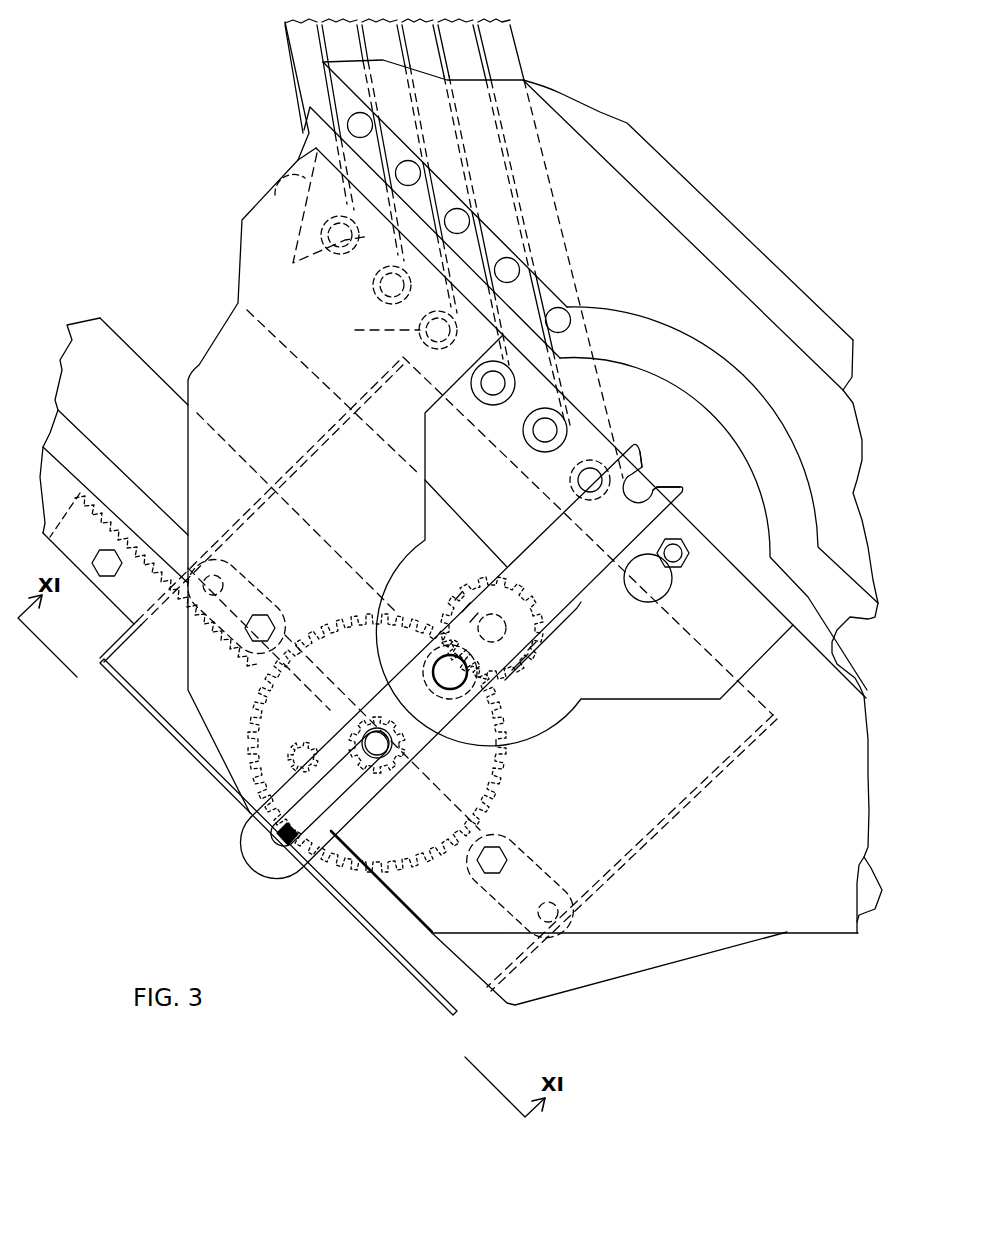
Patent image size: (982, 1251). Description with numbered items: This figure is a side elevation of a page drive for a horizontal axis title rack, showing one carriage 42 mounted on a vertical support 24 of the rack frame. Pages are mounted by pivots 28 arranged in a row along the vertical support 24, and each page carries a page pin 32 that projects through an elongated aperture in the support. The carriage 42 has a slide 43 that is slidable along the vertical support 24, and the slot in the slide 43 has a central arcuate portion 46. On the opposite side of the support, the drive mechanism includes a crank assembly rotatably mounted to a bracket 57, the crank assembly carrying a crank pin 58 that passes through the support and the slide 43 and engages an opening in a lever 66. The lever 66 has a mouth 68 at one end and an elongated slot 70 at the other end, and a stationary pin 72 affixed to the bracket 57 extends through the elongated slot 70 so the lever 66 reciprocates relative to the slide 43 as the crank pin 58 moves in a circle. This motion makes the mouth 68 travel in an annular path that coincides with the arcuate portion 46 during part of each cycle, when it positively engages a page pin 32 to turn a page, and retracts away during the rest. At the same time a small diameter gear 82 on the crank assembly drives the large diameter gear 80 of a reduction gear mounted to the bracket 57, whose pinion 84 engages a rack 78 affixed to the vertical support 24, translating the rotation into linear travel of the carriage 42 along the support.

The vertical support 24 is at (640, 975).
The pivot 28 is at (526, 433).
The page pin 32 is at (563, 308).
The carriage 42 is at (220, 332).
The slide 43 is at (710, 927).
The arcuate portion 46 is at (643, 318).
The bracket 57 is at (187, 750).
The crank pin 58 is at (460, 680).
The lever 66 is at (590, 602).
The mouth 68 is at (650, 490).
The elongated slot 70 is at (281, 850).
The stationary pin 72 is at (378, 758).
The rack 78 is at (80, 493).
The large diameter gear 80 is at (506, 768).
The small diameter gear 82 is at (540, 662).
The pinion 84 is at (412, 758).